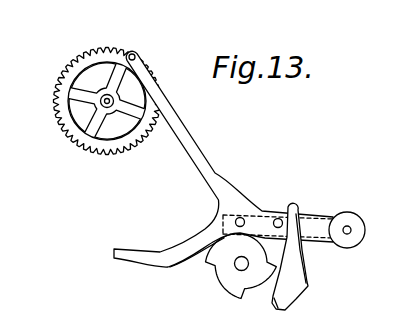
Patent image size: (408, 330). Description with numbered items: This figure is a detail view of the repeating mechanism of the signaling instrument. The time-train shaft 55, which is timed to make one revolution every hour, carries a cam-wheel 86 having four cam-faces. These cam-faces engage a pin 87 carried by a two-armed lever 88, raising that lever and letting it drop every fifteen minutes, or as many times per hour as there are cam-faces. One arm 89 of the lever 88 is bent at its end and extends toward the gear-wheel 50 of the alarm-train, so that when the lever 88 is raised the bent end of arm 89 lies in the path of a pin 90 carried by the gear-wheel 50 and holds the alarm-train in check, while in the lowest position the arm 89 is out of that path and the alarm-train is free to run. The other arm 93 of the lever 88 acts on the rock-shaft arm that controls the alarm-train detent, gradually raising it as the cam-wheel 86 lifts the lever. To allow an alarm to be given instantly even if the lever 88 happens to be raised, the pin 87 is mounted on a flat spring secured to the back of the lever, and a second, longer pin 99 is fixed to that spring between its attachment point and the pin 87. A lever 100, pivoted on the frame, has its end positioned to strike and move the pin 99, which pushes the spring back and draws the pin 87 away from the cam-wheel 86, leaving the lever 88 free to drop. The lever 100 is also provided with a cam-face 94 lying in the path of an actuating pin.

The fifth gear 50 is at (69, 71).
The pin 90 is at (130, 54).
The arm 89 is at (223, 170).
The two-armed lever 88 is at (223, 170).
The arm 93 is at (135, 257).
The pin 87 is at (246, 217).
The second pin 99 is at (281, 219).
The lever 100 is at (297, 255).
The cam-face 94 is at (312, 256).
The cam-wheel 86 is at (223, 277).
The shaft 55 is at (243, 268).